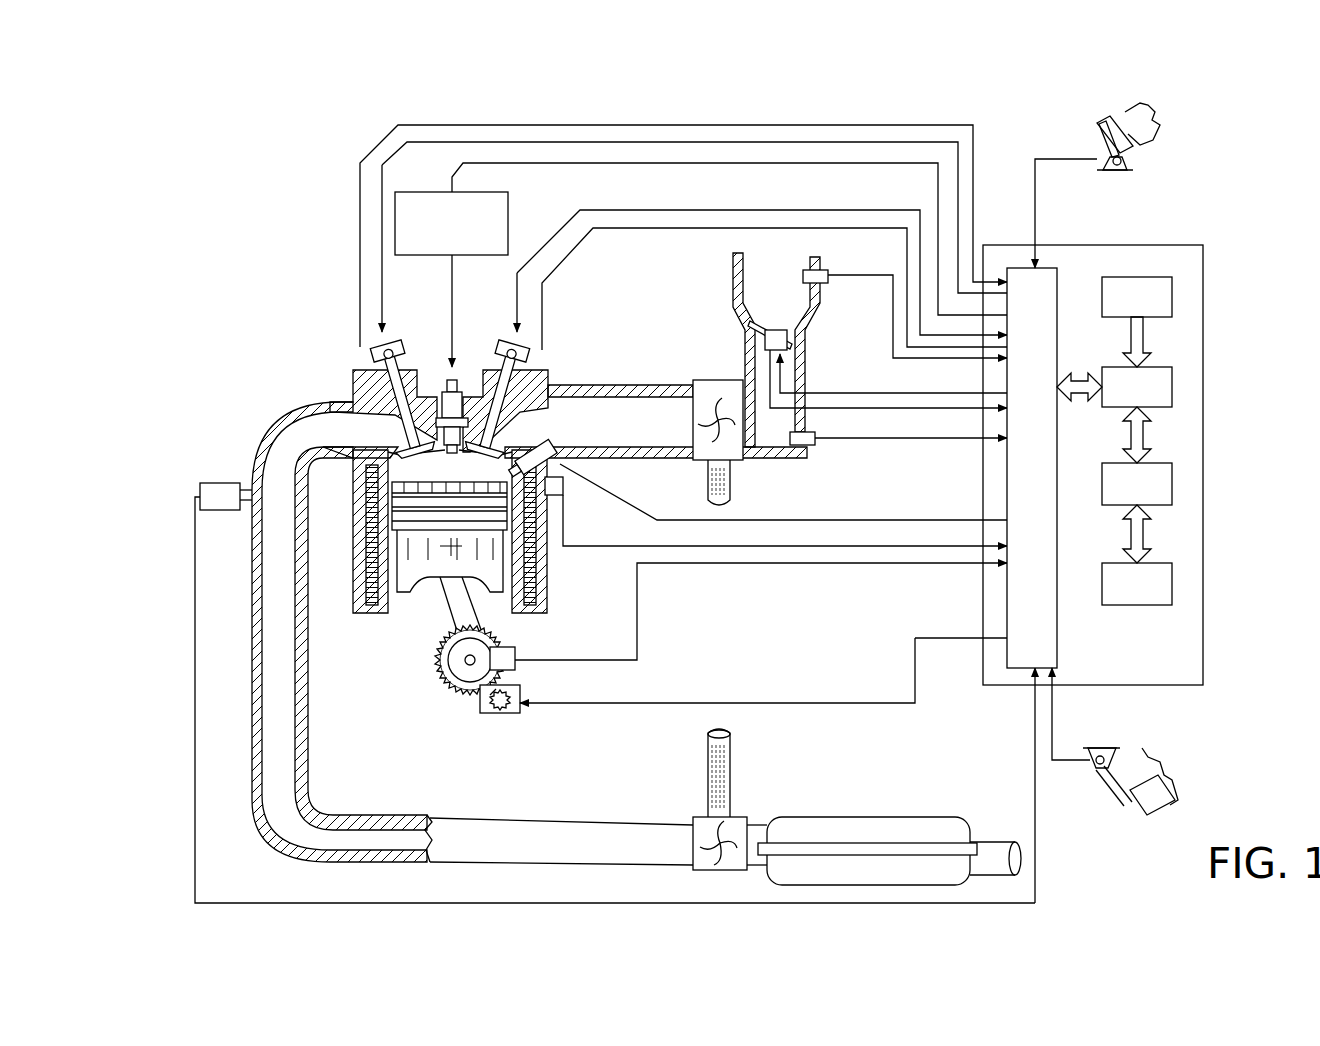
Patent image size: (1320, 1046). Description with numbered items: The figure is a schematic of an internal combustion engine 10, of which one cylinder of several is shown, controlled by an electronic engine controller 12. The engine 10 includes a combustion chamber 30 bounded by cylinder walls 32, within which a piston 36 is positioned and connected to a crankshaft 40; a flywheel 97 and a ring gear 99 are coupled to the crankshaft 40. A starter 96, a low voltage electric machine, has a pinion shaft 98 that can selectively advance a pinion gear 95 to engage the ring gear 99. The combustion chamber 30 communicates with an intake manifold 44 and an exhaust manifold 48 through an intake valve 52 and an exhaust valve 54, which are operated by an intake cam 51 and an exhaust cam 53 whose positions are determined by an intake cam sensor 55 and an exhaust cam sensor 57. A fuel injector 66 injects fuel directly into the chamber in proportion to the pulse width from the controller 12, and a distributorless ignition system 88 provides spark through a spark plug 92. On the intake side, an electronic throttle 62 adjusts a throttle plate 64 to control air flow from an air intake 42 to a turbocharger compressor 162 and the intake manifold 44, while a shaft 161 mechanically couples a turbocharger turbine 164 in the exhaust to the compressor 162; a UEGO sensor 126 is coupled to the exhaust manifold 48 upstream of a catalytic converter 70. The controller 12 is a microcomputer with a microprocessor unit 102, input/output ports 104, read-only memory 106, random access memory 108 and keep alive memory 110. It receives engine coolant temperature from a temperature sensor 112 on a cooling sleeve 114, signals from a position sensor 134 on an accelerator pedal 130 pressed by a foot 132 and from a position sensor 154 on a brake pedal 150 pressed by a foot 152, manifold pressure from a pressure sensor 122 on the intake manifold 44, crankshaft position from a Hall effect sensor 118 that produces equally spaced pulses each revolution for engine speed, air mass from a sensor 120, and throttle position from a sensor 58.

The internal combustion engine 10 is at (290, 325).
The electronic engine controller 12 is at (1203, 247).
The combustion chamber 30 is at (448, 468).
The cylinder walls 32 is at (395, 610).
The piston 36 is at (435, 565).
The crankshaft 40 is at (455, 688).
The air intake 42 is at (776, 350).
The intake manifold 44 is at (656, 421).
The exhaust manifold 48 is at (472, 633).
The intake cam 51 is at (510, 338).
The intake valve 52 is at (500, 437).
The exhaust cam 53 is at (392, 338).
The exhaust valve 54 is at (402, 440).
The intake cam sensor 55 is at (525, 360).
The exhaust cam sensor 57 is at (378, 362).
The throttle position sensor 58 is at (765, 350).
The electronic throttle 62 is at (800, 335).
The throttle plate 64 is at (755, 334).
The fuel injector 66 is at (562, 466).
The catalytic converter 70 is at (805, 817).
The distributorless ignition system 88 is at (410, 192).
The spark plug 92 is at (456, 378).
The pinion gear 95 is at (504, 715).
The starter 96 is at (520, 705).
The flywheel 97 is at (448, 663).
The pinion shaft 98 is at (490, 712).
The ring gear 99 is at (466, 698).
The microprocessor unit 102 is at (1172, 385).
The input/output ports 104 is at (1060, 272).
The read-only memory 106 is at (1172, 292).
The random access memory 108 is at (1172, 483).
The keep alive memory 110 is at (1172, 583).
The temperature sensor 112 is at (563, 494).
The cooling sleeve 114 is at (538, 565).
The Hall effect sensor 118 is at (516, 655).
The air mass sensor 120 is at (820, 270).
The pressure sensor 122 is at (812, 447).
The UEGO sensor 126 is at (200, 486).
The accelerator pedal 130 is at (1100, 142).
The foot 132 is at (1150, 125).
The position sensor 134 is at (1133, 165).
The brake pedal 150 is at (1125, 803).
The foot 152 is at (1150, 762).
The position sensor 154 is at (1086, 750).
The shaft 161 is at (710, 485).
The turbocharger compressor 162 is at (693, 380).
The turbocharger turbine 164 is at (693, 817).